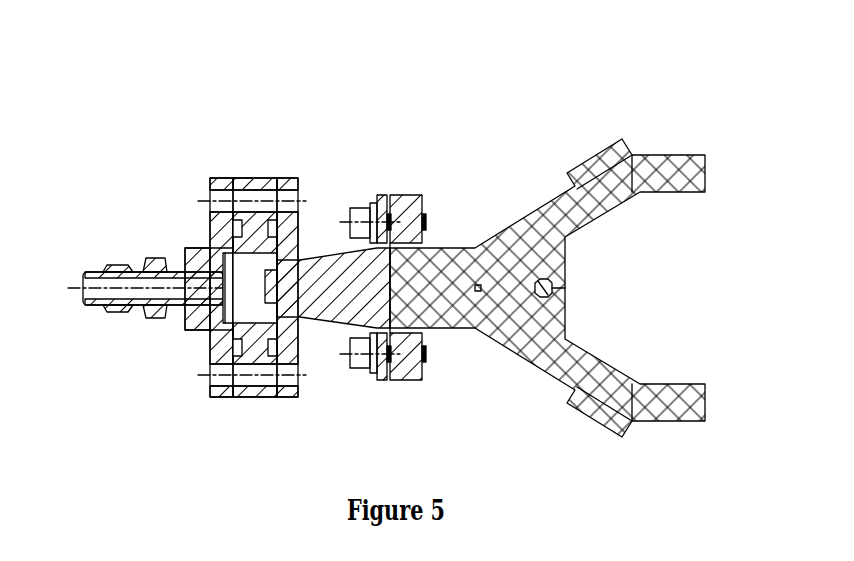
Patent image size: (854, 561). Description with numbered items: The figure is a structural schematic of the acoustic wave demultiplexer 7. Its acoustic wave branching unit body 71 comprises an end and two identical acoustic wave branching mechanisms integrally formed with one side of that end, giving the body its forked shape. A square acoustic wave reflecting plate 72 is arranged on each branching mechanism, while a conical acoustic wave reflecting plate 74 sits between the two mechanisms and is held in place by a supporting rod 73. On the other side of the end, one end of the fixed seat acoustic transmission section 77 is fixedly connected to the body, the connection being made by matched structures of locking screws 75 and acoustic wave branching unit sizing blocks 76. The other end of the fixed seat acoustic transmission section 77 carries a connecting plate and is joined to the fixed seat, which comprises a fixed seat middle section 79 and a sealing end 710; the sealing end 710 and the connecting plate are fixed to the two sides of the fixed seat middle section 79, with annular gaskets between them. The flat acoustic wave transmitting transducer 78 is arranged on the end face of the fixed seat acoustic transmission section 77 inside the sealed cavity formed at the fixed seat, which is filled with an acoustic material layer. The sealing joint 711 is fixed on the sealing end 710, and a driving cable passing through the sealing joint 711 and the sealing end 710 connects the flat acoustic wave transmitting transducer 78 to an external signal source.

The acoustic wave demultiplexer 7 is at (85, 123).
The acoustic wave branching unit body 71 is at (597, 365).
The acoustic wave reflecting plate 72 is at (607, 147).
The supporting rod 73 is at (480, 288).
The acoustic wave reflecting plate 74 is at (565, 318).
The locking screw 75 is at (360, 213).
The acoustic wave branching unit sizing block 76 is at (395, 210).
The fixed seat acoustic transmission section 77 is at (308, 270).
The flat acoustic wave transmitting transducer 78 is at (297, 372).
The fixed seat middle section 79 is at (253, 187).
The sealing end 710 is at (220, 222).
The sealing joint 711 is at (155, 260).